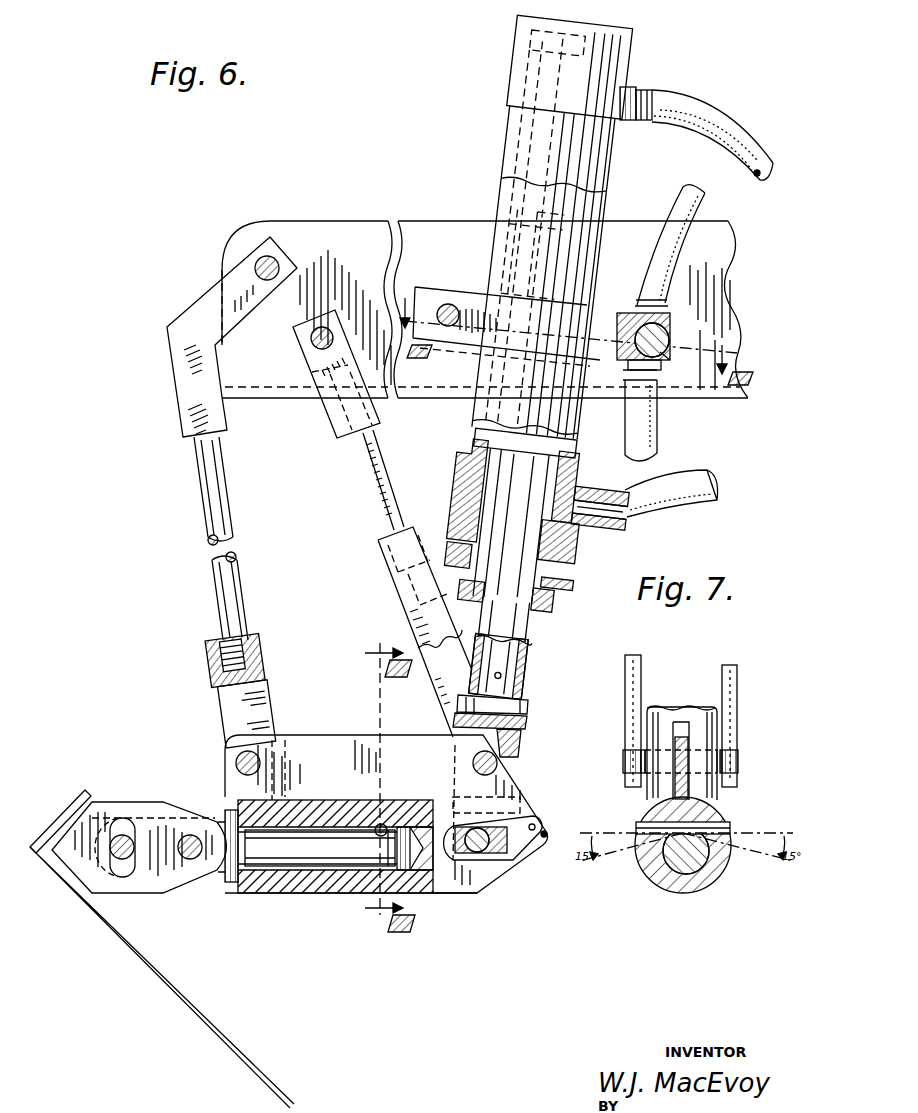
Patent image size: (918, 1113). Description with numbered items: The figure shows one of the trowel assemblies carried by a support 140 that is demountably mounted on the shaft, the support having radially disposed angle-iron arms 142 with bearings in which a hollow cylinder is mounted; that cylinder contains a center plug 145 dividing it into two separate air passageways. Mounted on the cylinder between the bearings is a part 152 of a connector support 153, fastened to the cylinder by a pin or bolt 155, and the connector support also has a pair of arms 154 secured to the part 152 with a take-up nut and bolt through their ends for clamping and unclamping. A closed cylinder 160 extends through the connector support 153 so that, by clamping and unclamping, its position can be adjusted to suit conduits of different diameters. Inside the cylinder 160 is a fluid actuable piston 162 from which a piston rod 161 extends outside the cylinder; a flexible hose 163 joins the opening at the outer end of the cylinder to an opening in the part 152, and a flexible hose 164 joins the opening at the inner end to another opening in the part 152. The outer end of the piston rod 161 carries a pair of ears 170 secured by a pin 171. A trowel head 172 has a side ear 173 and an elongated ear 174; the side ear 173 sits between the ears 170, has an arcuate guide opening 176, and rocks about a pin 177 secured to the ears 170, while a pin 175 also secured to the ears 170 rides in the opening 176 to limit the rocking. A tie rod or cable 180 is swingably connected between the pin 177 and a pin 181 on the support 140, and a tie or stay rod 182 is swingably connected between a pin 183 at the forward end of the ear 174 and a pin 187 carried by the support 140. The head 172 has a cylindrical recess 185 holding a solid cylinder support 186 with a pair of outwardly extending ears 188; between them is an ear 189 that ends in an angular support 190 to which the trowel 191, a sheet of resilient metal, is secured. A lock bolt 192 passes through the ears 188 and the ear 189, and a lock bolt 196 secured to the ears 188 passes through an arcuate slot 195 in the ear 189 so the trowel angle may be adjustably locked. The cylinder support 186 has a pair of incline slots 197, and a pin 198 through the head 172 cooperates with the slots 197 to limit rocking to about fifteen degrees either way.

In FIG. 6, the support 140 is at (394, 215).
In FIG. 6, the arm 142 is at (282, 234).
In FIG. 6, the center plug 145 is at (658, 328).
In FIG. 6, the part of connector support 152 is at (630, 317).
In FIG. 6, the connector support 153 is at (475, 280).
In FIG. 6, the arm 154 is at (431, 285).
In FIG. 6, the pin or bolt 155 is at (666, 354).
In FIG. 6, the cylinder 160 is at (520, 160).
In FIG. 6, the piston rod 161 is at (522, 650).
In FIG. 6, the piston 162 is at (524, 240).
In FIG. 6, the flexible hose 163 is at (682, 480).
In FIG. 6, the flexible hose 164 is at (712, 172).
In FIG. 6, the ears 170 is at (519, 743).
In FIG. 7, the ears 170 is at (660, 706).
In FIG. 6, the pin 171 is at (523, 672).
In FIG. 6, the trowel head 172 is at (420, 897).
In FIG. 6, the side ear 173 is at (513, 863).
In FIG. 6, the elongated ear 174 is at (310, 735).
In FIG. 7, the elongated ear 174 is at (688, 741).
In FIG. 6, the pin 175 is at (482, 854).
In FIG. 6, the arcuate guide opening 176 is at (546, 826).
In FIG. 6, the pin 177 is at (499, 766).
In FIG. 7, the pin 177 is at (720, 764).
In FIG. 6, the tie rod or cable 180 is at (382, 493).
In FIG. 6, the pin 181 is at (318, 340).
In FIG. 6, the tie or stay rod 182 is at (238, 557).
In FIG. 7, the tie or stay rod 182 is at (630, 672).
In FIG. 6, the pin 183 is at (240, 762).
In FIG. 6, the cylindrical recess 185 is at (308, 827).
In FIG. 6, the solid cylinder support 186 is at (278, 855).
In FIG. 6, the pin 187 is at (262, 266).
In FIG. 6, the ears 188 is at (220, 877).
In FIG. 6, the ear 189 is at (152, 887).
In FIG. 6, the angular support 190 is at (63, 870).
In FIG. 6, the trowel 191 is at (146, 962).
In FIG. 6, the lock bolt 192 is at (191, 835).
In FIG. 6, the arcuate slot 195 is at (117, 814).
In FIG. 6, the lock bolt 196 is at (128, 836).
In FIG. 6, the incline slots 197 is at (377, 835).
In FIG. 7, the incline slots 197 is at (666, 872).
In FIG. 6, the pin 198 is at (384, 823).
In FIG. 7, the pin 198 is at (700, 826).